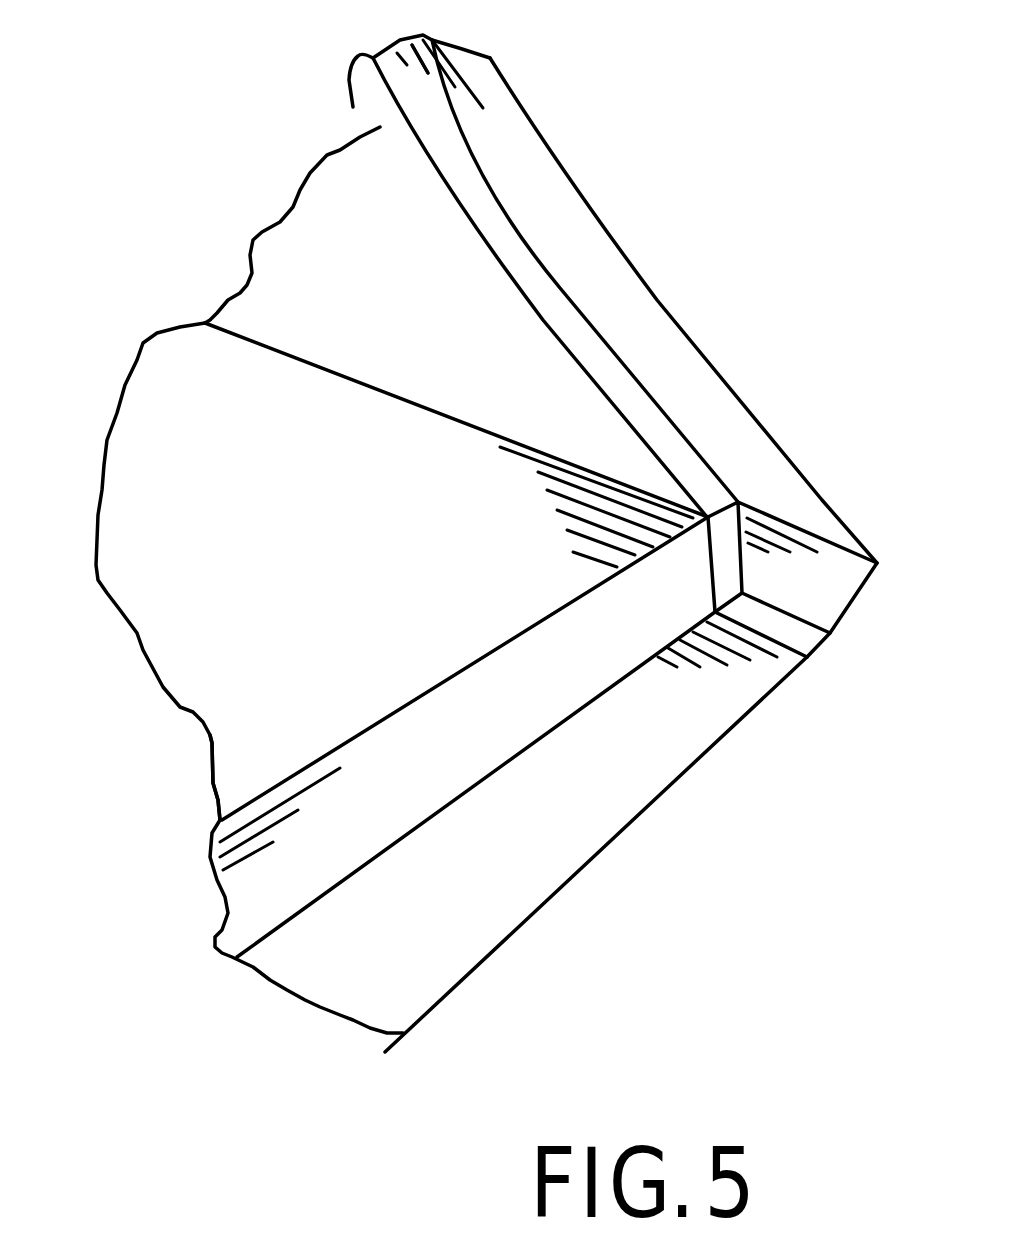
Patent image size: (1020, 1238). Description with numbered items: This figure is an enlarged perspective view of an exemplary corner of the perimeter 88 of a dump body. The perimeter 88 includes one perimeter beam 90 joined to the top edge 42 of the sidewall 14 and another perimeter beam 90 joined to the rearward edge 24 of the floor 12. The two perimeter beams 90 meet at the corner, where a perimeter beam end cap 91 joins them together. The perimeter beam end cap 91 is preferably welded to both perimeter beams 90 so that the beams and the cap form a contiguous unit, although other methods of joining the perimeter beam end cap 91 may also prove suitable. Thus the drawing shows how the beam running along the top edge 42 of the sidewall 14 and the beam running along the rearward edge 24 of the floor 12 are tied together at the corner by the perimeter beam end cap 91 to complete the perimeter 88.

The floor 12 is at (150, 560).
The sidewall 14 is at (294, 272).
The rearward edge 24 is at (267, 720).
The top edge 42 is at (437, 253).
The perimeter 88 is at (612, 198).
The perimeter beam 90 is at (673, 357).
The perimeter beam end cap 91 is at (815, 590).